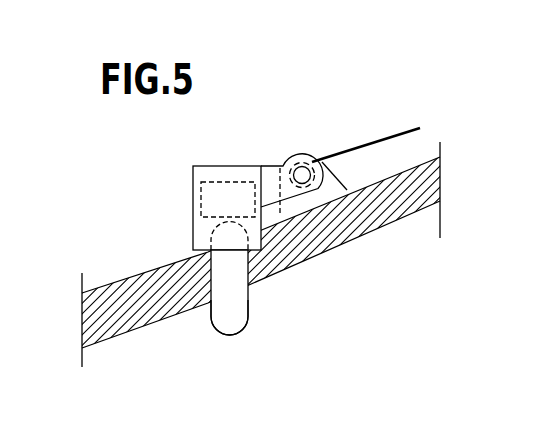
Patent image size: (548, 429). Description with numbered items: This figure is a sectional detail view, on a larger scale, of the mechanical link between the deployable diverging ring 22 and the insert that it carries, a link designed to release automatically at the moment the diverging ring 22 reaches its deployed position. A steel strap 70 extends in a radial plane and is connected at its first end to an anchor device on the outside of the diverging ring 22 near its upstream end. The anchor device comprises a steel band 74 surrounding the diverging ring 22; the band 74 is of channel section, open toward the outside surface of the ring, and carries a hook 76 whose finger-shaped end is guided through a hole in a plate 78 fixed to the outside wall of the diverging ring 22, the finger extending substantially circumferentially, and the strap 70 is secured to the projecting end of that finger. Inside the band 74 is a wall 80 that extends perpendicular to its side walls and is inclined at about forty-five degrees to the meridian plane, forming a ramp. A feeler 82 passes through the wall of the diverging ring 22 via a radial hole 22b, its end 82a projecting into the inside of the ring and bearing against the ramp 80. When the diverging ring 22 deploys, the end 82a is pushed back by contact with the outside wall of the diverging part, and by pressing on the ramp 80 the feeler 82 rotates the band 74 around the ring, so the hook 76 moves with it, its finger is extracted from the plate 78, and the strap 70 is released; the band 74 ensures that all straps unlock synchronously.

The diverging ring 22 is at (393, 220).
The radial hole 22b is at (262, 256).
The strap 70 is at (391, 135).
The band 74 is at (256, 165).
The hook 76 is at (281, 165).
The plate 78 is at (330, 193).
The wall 80 is at (208, 202).
The feeler 82 is at (230, 266).
The feeler end 82a is at (231, 327).